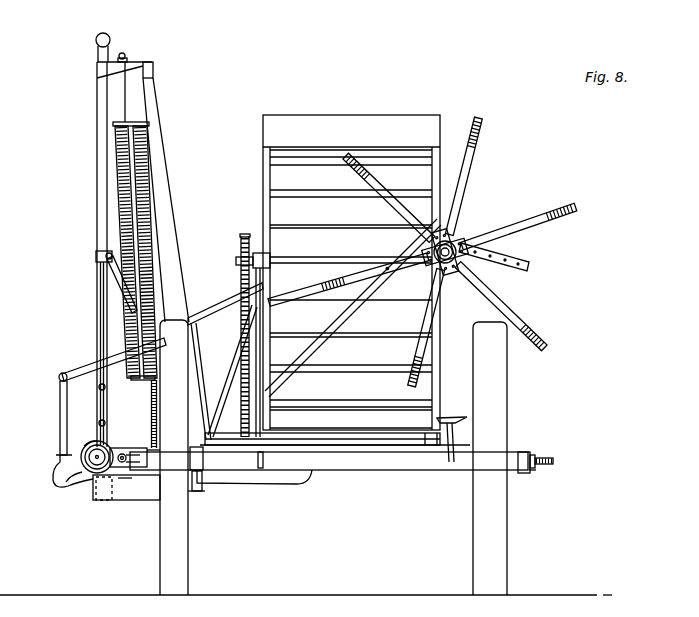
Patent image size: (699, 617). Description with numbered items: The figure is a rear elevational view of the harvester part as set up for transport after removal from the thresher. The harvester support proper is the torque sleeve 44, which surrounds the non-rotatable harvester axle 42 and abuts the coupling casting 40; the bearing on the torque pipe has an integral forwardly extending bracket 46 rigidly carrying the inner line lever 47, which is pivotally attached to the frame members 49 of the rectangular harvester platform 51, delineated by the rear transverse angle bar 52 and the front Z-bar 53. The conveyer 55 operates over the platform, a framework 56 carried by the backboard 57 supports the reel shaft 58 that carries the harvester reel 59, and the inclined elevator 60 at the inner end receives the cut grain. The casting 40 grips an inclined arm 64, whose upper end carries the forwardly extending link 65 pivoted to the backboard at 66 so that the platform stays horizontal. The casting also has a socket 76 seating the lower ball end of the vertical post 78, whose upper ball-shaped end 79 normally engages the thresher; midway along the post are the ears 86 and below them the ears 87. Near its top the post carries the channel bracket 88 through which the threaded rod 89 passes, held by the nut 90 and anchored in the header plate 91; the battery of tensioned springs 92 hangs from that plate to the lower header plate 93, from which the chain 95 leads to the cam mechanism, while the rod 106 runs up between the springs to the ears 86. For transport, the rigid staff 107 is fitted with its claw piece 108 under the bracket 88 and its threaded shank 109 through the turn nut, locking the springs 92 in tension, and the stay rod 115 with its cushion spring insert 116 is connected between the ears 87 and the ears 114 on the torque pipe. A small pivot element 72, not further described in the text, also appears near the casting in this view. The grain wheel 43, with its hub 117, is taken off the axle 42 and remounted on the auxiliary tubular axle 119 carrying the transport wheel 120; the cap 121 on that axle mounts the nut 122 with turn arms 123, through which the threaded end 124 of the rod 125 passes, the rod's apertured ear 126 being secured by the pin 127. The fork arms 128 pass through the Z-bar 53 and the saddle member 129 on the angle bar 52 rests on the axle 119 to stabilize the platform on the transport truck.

The coupling casting 40 is at (60, 462).
The harvester axle 42 is at (58, 481).
The grain wheel 43 is at (160, 556).
The torque sleeve 44 is at (93, 488).
The bracket 46 is at (194, 493).
The inner line lever 47 is at (250, 471).
The frame members 49 is at (383, 446).
The harvester platform 51 is at (340, 446).
The rear transverse angle bar 52 is at (268, 436).
The front transverse Z-bar 53 is at (424, 446).
The conveyer 55 is at (325, 470).
The framework 56 is at (510, 270).
The backboard 57 is at (241, 285).
The harvester reel shaft 58 is at (457, 240).
The harvester reel 59 is at (553, 207).
The elevator 60 is at (425, 177).
The arm 64 is at (59, 377).
The link 65 is at (86, 364).
The pivot connection 66 is at (240, 303).
The pivot pin 72 is at (122, 453).
The socket 76 is at (100, 498).
The vertical post 78 is at (97, 141).
The upper ball-shaped end 79 is at (108, 38).
The ears 86 is at (108, 252).
The ears 87 is at (96, 253).
The bracket 88 is at (100, 71).
The threaded rod 89 is at (124, 99).
The nut 90 is at (127, 58).
The header plate 91 is at (148, 125).
The tensioned springs 92 is at (151, 412).
The lower header plate 93 is at (146, 380).
The chain 95 is at (150, 393).
The rod 106 is at (124, 280).
The staff 107 is at (165, 175).
The claw piece 108 is at (153, 70).
The threaded shank 109 is at (198, 492).
The ears 114 is at (88, 445).
The stay rod 115 is at (100, 303).
The cushion spring insert 116 is at (60, 398).
The hub 117 is at (152, 470).
The tubular axle 119 is at (322, 482).
The transport wheel 120 is at (495, 508).
The cap 121 is at (523, 452).
The nut 122 is at (536, 457).
The turn arms 123 is at (532, 472).
The threaded end 124 is at (554, 461).
The rod 125 is at (124, 480).
The apertured ear 126 is at (126, 466).
The pin 127 is at (130, 460).
The fork arms 128 is at (448, 428).
The saddle member 129 is at (263, 458).